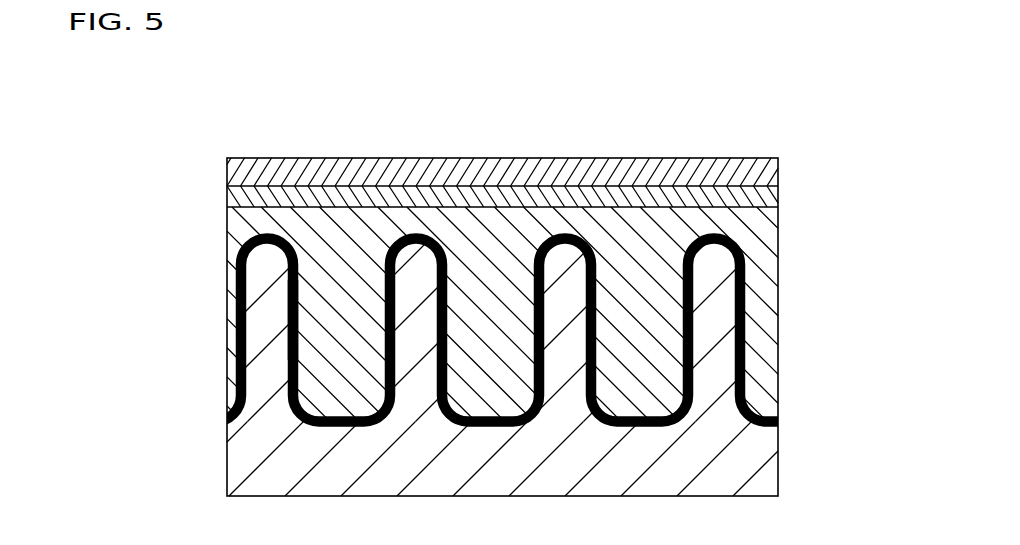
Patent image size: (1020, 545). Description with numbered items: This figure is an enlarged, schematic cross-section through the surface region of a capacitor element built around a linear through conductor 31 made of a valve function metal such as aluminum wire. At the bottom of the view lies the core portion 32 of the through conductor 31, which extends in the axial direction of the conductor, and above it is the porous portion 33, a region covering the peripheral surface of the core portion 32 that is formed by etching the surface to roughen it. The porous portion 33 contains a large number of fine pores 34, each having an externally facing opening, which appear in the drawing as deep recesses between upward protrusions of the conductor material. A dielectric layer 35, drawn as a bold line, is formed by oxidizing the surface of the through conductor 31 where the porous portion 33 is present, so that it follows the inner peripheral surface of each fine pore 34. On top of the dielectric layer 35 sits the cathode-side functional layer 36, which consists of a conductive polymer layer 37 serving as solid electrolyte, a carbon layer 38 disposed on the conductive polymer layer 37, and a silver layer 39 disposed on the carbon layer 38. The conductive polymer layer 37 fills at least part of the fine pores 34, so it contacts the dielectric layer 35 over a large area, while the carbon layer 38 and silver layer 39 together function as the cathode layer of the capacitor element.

The through conductor 31 is at (786, 476).
The core portion 32 is at (215, 417).
The porous portion 33 is at (215, 233).
The fine pore 34 is at (299, 315).
The dielectric layer 35 is at (746, 333).
The cathode-side functional layer 36 is at (867, 145).
The conductive polymer layer 37 is at (768, 246).
The carbon layer 38 is at (772, 198).
The silver layer 39 is at (772, 175).